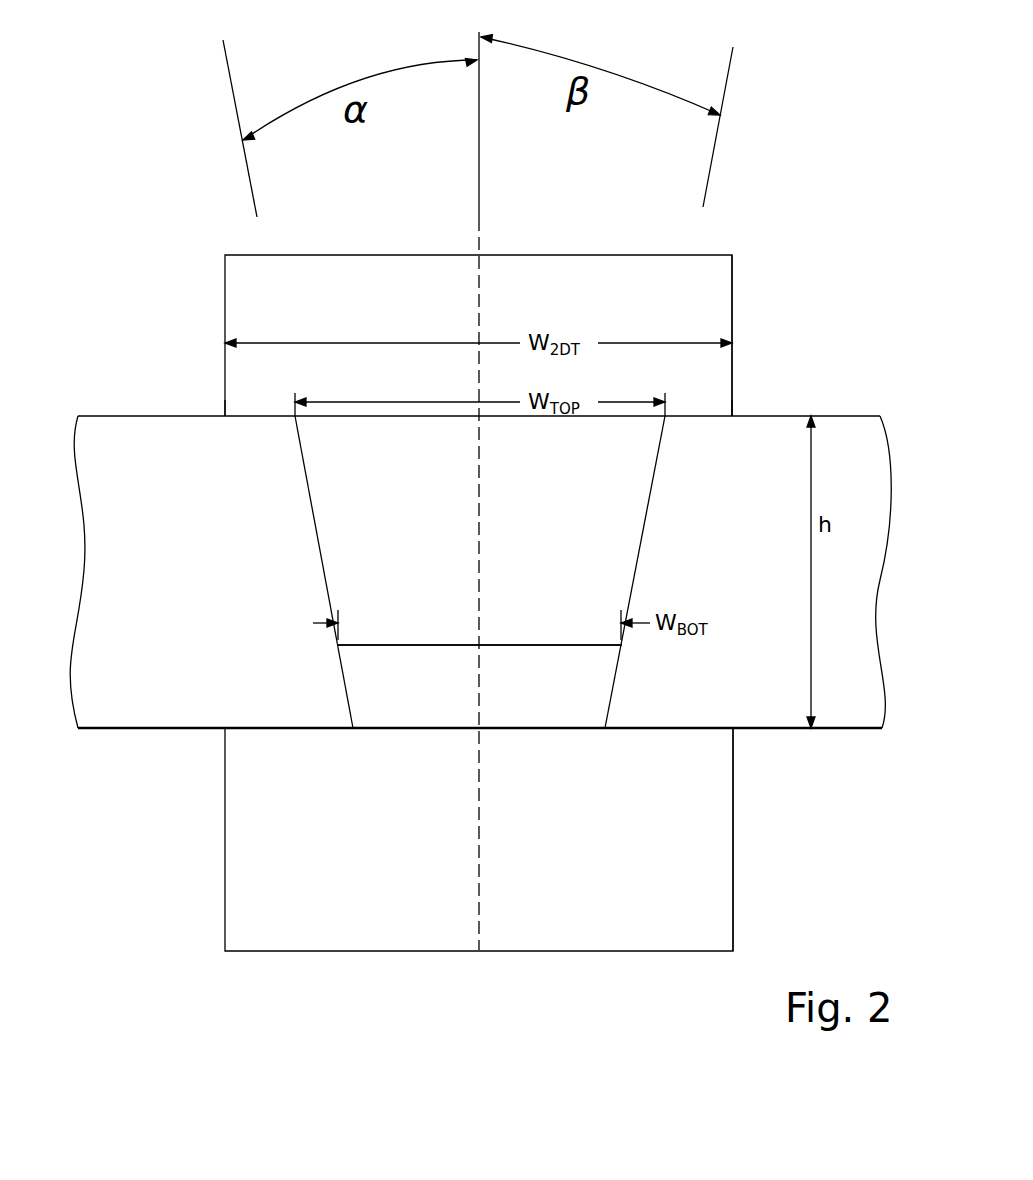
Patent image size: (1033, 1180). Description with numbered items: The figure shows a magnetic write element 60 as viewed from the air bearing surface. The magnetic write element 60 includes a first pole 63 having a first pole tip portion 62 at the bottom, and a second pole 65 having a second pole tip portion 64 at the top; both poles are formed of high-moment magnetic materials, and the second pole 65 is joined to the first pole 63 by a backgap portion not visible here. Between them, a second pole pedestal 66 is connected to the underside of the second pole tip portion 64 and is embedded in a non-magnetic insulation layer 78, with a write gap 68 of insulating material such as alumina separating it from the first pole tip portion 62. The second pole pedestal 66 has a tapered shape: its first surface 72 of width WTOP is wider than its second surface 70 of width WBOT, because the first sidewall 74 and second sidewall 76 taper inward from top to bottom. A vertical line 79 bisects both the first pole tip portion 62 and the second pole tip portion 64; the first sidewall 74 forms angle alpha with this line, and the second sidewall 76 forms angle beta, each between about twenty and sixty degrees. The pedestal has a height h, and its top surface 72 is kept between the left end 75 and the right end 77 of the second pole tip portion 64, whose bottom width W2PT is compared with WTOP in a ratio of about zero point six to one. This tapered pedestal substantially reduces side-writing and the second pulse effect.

The magnetic write element 60 is at (812, 66).
The first pole tip portion 62 is at (721, 933).
The first pole 63 is at (697, 826).
The second pole tip portion 64 is at (362, 295).
The second pole 65 is at (720, 273).
The second pole pedestal 66 is at (471, 560).
The write gap 68 is at (426, 702).
The second surface 70 is at (411, 643).
The first surface 72 is at (393, 421).
The first sidewall 74 is at (317, 530).
The left end 75 is at (225, 415).
The second sidewall 76 is at (655, 487).
The right end 77 is at (733, 415).
The insulation layer 78 is at (212, 594).
The vertical line 79 is at (481, 200).